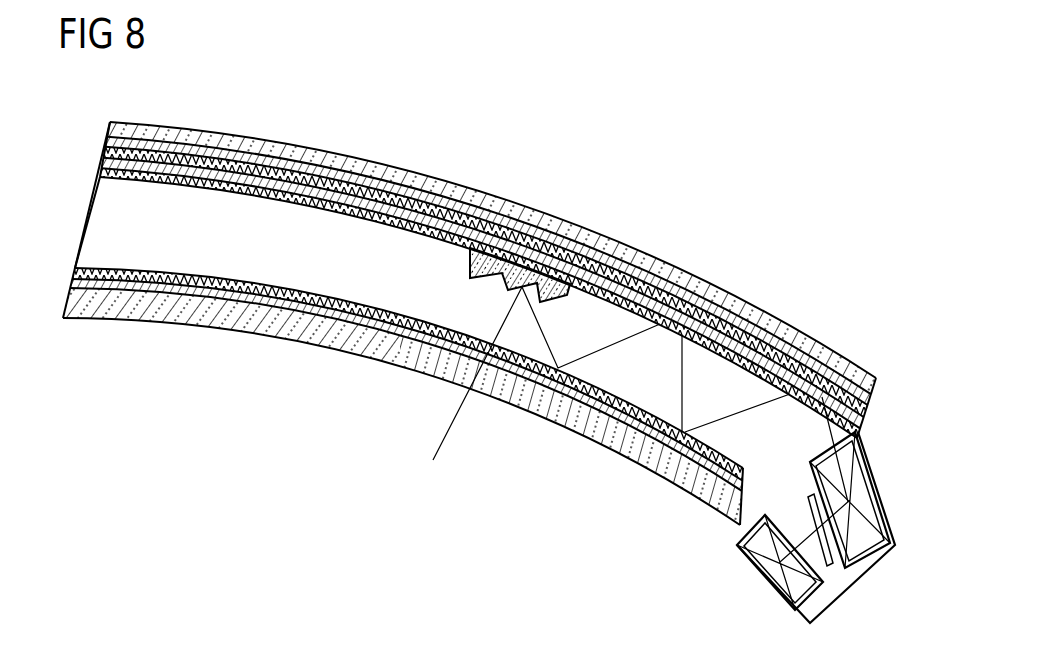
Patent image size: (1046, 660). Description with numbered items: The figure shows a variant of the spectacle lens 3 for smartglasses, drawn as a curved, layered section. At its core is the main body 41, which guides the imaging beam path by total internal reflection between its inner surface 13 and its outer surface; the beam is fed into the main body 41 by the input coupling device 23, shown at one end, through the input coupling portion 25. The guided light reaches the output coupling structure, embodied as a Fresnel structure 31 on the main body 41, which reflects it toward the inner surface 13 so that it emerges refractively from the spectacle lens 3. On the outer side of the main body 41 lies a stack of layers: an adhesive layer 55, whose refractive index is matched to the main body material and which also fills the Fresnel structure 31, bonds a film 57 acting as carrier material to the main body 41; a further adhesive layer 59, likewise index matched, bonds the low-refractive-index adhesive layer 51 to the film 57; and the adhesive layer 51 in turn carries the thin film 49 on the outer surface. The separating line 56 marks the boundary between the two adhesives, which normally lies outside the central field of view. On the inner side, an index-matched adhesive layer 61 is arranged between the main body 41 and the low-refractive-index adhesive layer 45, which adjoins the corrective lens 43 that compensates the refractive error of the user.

The spectacle lens 3 is at (487, 122).
The inner surface 13 is at (258, 292).
The input coupling device 23 is at (887, 476).
The input coupling portion 25 is at (775, 461).
The Fresnel structure 31 is at (483, 286).
The main body 41 is at (170, 204).
The corrective lens 43 is at (120, 312).
The adhesive layer 45 is at (182, 297).
The film 49 is at (792, 333).
The adhesive layer 51 is at (728, 310).
The adhesive layer 55 is at (301, 172).
The separating line 56 is at (572, 284).
The film 57 is at (361, 170).
The further adhesive layer 59 is at (410, 202).
The adhesive layer 61 is at (407, 374).